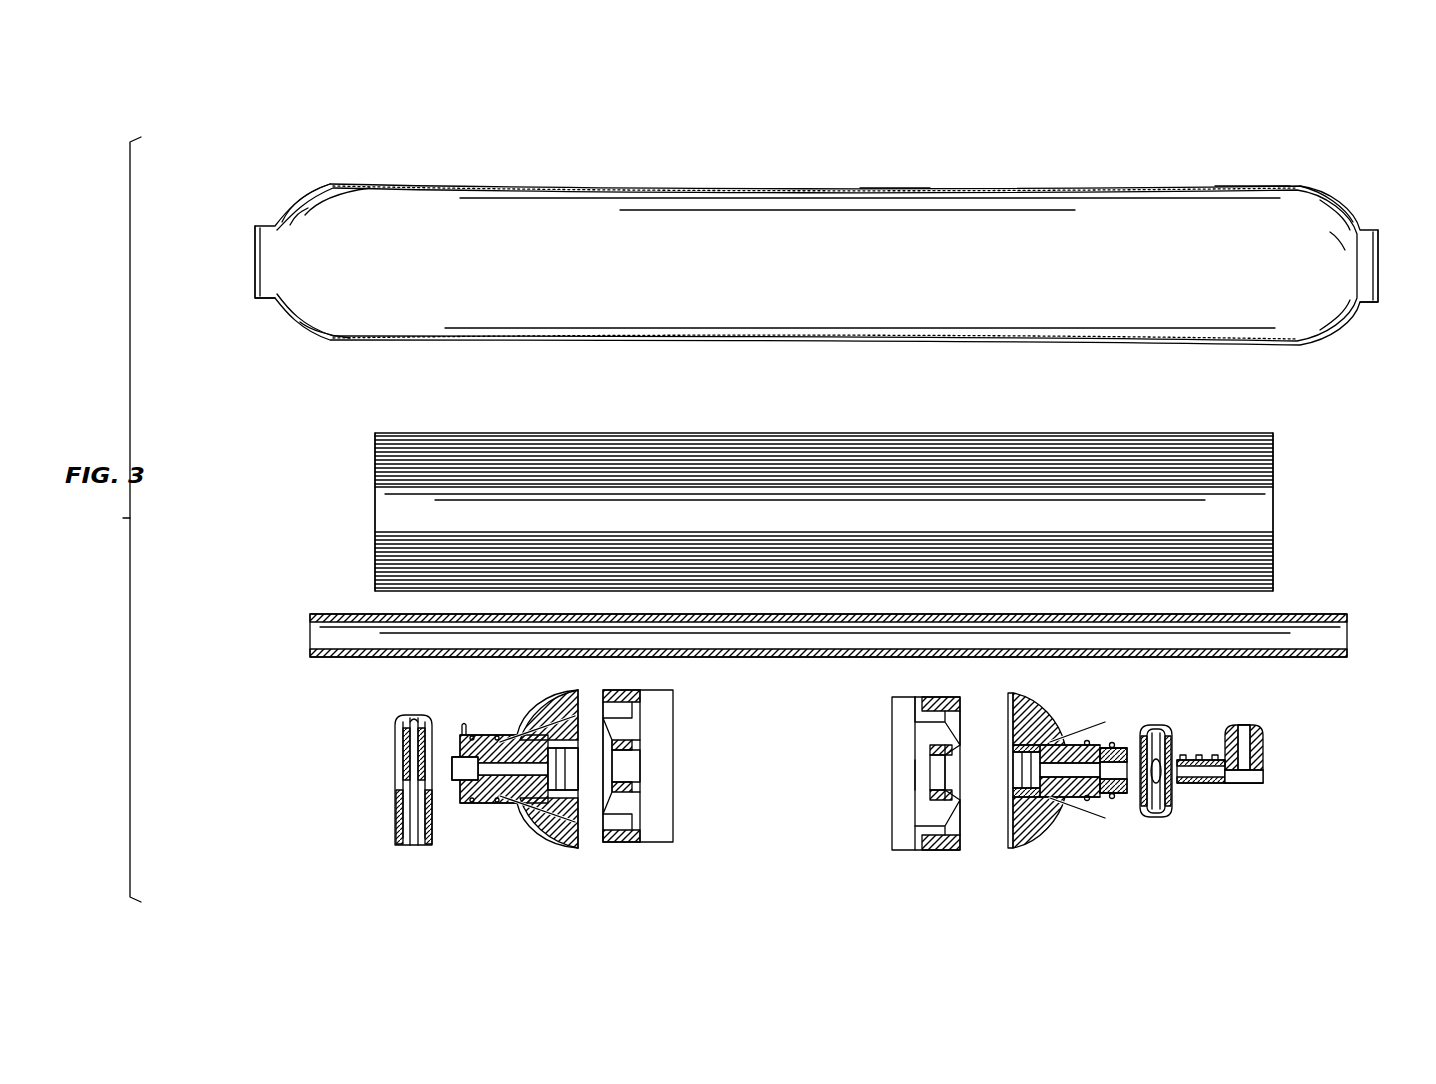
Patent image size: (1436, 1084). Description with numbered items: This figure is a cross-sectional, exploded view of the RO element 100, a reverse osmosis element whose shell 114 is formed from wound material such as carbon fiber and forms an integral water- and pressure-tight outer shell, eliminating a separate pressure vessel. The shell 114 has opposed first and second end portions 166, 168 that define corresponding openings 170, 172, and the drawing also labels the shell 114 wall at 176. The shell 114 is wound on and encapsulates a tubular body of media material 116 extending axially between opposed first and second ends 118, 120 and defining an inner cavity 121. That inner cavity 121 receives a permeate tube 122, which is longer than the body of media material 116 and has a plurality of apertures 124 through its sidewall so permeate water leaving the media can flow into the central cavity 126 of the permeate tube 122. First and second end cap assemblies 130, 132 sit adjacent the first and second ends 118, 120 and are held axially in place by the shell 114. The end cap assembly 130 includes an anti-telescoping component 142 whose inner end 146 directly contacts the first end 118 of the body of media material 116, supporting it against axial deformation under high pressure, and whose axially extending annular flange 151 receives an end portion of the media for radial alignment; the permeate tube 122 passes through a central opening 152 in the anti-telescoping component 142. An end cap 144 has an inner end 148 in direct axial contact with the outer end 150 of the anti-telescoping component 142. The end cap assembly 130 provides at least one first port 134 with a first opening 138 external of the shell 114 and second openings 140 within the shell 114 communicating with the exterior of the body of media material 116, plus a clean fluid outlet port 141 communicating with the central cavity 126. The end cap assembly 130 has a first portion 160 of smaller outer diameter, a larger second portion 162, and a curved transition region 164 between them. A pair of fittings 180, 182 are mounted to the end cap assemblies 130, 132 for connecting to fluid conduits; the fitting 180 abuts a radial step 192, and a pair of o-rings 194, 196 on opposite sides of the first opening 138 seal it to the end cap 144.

The RO element 100 is at (159, 519).
The shell 114 is at (608, 205).
The body of media material 116 is at (650, 460).
The first end 118 is at (1276, 462).
The second end 120 is at (373, 456).
The inner cavity 121 is at (792, 508).
The permeate tube 122 is at (828, 660).
The apertures 124 is at (745, 657).
The central cavity 126 is at (683, 638).
The first end cap assembly 130 is at (1035, 807).
The second end cap assembly 132 is at (683, 866).
The first port 134 is at (1040, 742).
The first opening 138 is at (1102, 744).
The second opening 140 is at (1104, 807).
The clean fluid outlet port 141 is at (1092, 738).
The anti-telescoping component 142 is at (904, 779).
The end cap 144 is at (1068, 822).
The inner end 146 is at (912, 822).
The inner end 148 is at (1010, 800).
The outer end 150 is at (958, 728).
The annular flange 151 is at (898, 835).
The central opening 152 is at (925, 772).
The first portion 160 is at (1112, 802).
The second portion 162 is at (1018, 852).
The transition region 164 is at (1072, 808).
The first end portion 166 is at (1326, 178).
The second end portion 168 is at (313, 176).
The opening 170 is at (1382, 248).
The opening 172 is at (245, 246).
The shell wall 176 is at (1206, 172).
The fitting 180 is at (890, 176).
The fitting 182 is at (395, 824).
The radial step 192 is at (1108, 812).
The o-ring 194 is at (1086, 768).
The o-ring 196 is at (1115, 742).